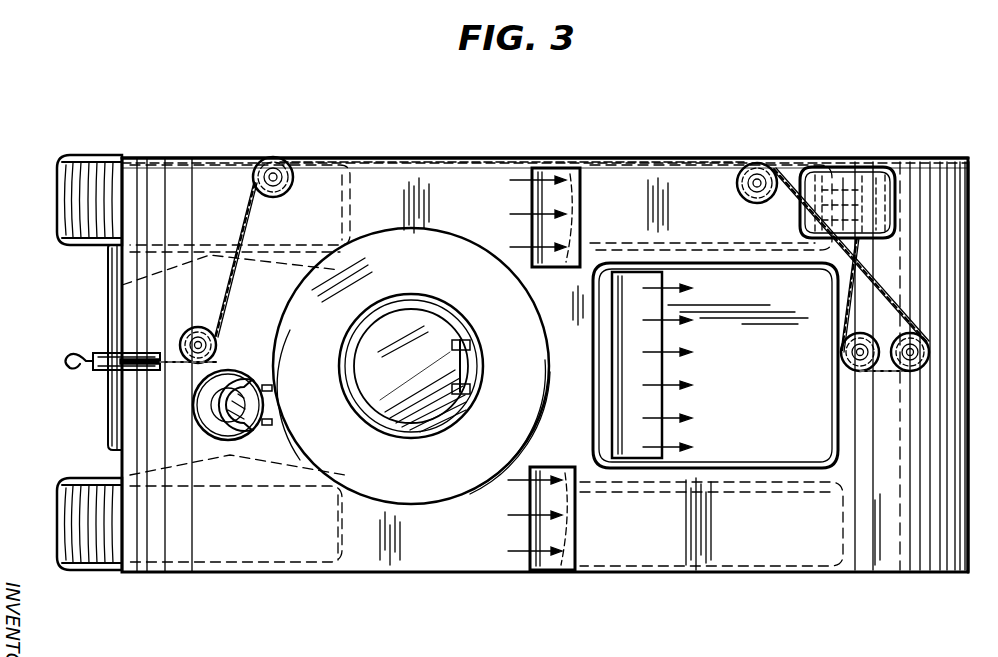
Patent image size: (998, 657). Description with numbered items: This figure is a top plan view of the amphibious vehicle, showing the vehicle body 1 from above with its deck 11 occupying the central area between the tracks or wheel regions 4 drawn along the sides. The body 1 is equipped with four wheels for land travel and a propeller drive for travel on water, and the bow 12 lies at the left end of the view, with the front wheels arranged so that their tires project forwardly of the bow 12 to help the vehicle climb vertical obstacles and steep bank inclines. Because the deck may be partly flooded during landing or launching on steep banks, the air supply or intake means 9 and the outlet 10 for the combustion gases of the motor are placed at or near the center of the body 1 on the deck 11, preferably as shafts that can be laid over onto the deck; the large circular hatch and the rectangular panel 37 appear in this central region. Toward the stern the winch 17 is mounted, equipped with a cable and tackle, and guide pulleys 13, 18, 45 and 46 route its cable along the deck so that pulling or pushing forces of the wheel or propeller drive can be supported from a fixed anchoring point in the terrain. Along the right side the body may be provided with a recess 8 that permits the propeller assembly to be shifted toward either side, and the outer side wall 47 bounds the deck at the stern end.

The vehicle body 1 is at (456, 577).
The endless tracks 4 is at (94, 240).
The recess 8 is at (905, 482).
The air supply or intake means 9 is at (560, 170).
The outlet for the gases of combustion 10 is at (652, 336).
The deck 11 is at (458, 170).
The bow 12 is at (108, 322).
The guide pulleys 13 is at (362, 168).
The winch 17 is at (850, 178).
The pulley 18 is at (786, 203).
The access panel 37 is at (770, 470).
The pulley 45 is at (842, 352).
The pulley 46 is at (928, 352).
The side wall 47 is at (968, 242).